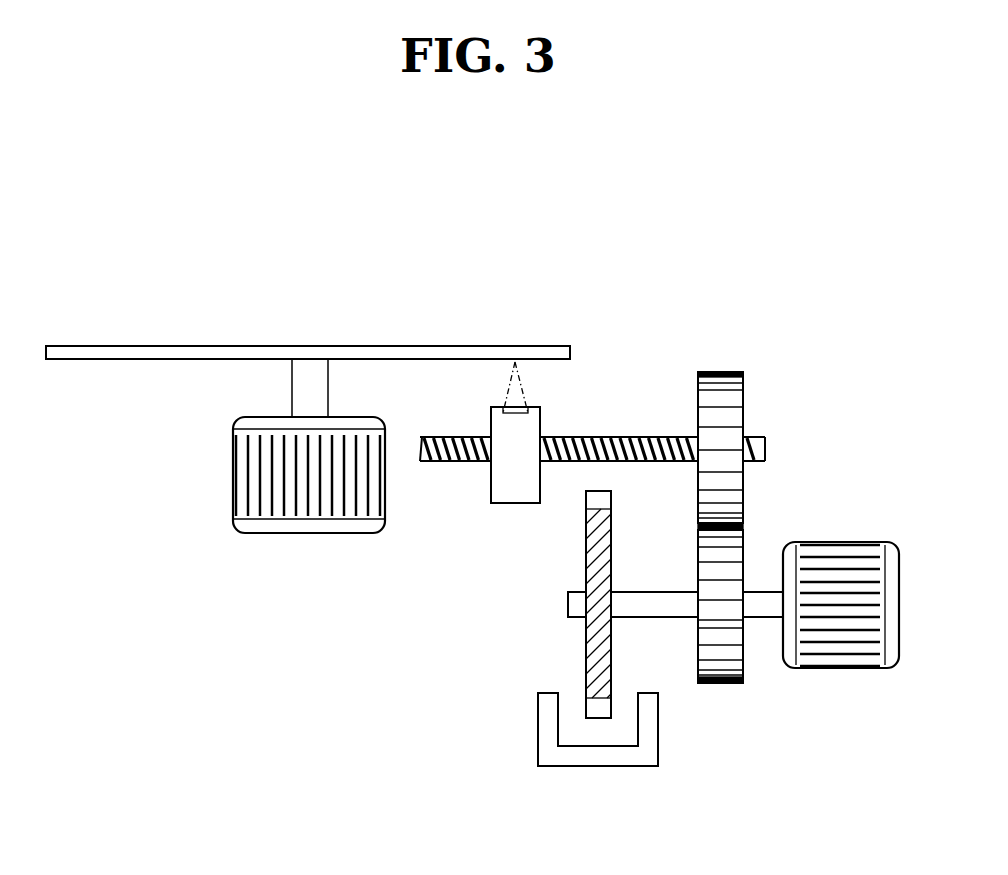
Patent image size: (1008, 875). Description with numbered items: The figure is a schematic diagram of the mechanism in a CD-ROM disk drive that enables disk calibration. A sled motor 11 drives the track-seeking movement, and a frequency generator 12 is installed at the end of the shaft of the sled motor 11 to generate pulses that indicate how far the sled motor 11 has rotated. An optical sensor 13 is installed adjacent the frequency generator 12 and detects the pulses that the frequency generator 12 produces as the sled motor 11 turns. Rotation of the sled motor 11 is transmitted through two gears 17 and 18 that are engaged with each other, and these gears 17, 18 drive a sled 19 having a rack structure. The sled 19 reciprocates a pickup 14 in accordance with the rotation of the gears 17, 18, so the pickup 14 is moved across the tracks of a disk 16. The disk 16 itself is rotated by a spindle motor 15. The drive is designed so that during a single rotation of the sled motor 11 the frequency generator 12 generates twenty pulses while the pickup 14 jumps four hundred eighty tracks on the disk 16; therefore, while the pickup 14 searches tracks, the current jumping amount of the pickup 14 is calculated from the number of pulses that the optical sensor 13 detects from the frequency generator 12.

The sled motor 11 is at (830, 670).
The frequency generator 12 is at (585, 640).
The optical sensor 13 is at (538, 727).
The pickup 14 is at (500, 483).
The spindle motor 15 is at (234, 485).
The disk 16 is at (357, 346).
The gear 17 is at (722, 685).
The gear 18 is at (745, 404).
The sled 19 is at (609, 435).